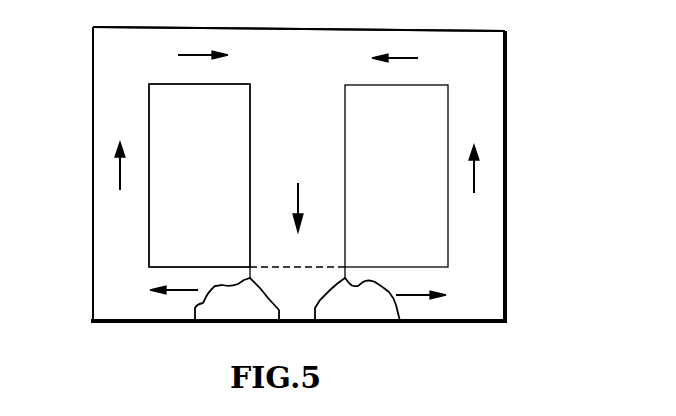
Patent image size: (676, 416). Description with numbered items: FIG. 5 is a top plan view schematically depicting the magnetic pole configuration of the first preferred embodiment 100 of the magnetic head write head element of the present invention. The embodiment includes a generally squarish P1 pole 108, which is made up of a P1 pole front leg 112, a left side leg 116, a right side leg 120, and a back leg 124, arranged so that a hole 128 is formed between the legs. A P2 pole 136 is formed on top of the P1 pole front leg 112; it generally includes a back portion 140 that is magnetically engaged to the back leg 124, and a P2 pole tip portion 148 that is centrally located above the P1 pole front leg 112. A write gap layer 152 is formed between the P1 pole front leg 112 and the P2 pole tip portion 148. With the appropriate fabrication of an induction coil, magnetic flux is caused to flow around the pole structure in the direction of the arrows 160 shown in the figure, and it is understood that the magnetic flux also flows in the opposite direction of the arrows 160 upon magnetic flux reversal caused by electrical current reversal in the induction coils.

The first preferred embodiment 100 is at (546, 26).
The P1 pole 108 is at (493, 107).
The P1 pole front leg 112 is at (439, 308).
The left side leg 116 is at (106, 97).
The right side leg 120 is at (496, 218).
The back leg 124 is at (265, 43).
The hole 128 is at (160, 212).
The P2 pole 136 is at (267, 128).
The back portion 140 is at (302, 60).
The P2 pole tip portion 148 is at (297, 313).
The write gap layer 152 is at (376, 315).
The arrows 160 is at (117, 172).